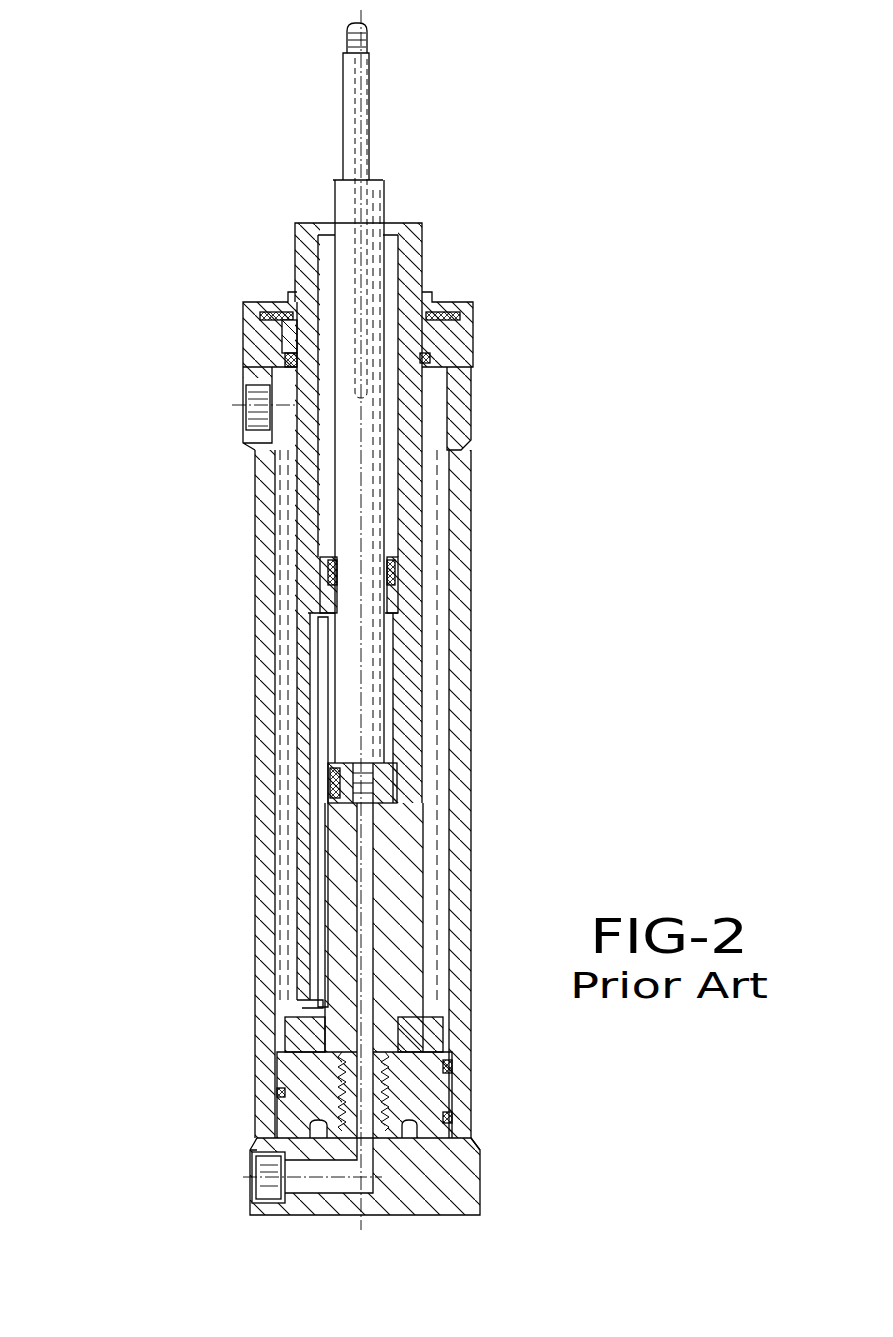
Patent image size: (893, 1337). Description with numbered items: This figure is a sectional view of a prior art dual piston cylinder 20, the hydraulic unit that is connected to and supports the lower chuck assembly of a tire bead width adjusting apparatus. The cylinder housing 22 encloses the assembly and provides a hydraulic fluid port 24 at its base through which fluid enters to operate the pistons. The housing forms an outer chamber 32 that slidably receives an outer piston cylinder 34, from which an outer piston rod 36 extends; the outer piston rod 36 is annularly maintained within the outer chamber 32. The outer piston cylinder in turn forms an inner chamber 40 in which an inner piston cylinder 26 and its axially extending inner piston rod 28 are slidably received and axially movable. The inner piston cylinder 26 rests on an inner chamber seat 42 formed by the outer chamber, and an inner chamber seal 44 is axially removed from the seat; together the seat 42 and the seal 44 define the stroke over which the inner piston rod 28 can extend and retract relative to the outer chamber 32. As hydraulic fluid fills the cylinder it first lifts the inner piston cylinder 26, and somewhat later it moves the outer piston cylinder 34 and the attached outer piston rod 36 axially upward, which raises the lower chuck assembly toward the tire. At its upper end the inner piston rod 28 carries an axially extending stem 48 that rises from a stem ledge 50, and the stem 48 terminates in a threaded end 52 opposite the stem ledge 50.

The dual piston cylinder 20 is at (147, 652).
The cylinder housing 22 is at (255, 560).
The hydraulic fluid port 24 is at (242, 1192).
The inner piston cylinder 26 is at (347, 773).
The inner piston rod 28 is at (368, 437).
The outer chamber 32 is at (428, 522).
The outer piston cylinder 34 is at (305, 1082).
The outer piston rod 36 is at (428, 840).
The inner chamber 40 is at (400, 682).
The inner chamber seat 42 is at (343, 803).
The inner chamber seal 44 is at (390, 620).
The stem 48 is at (350, 122).
The stem ledge 50 is at (376, 180).
The threaded end 52 is at (362, 37).